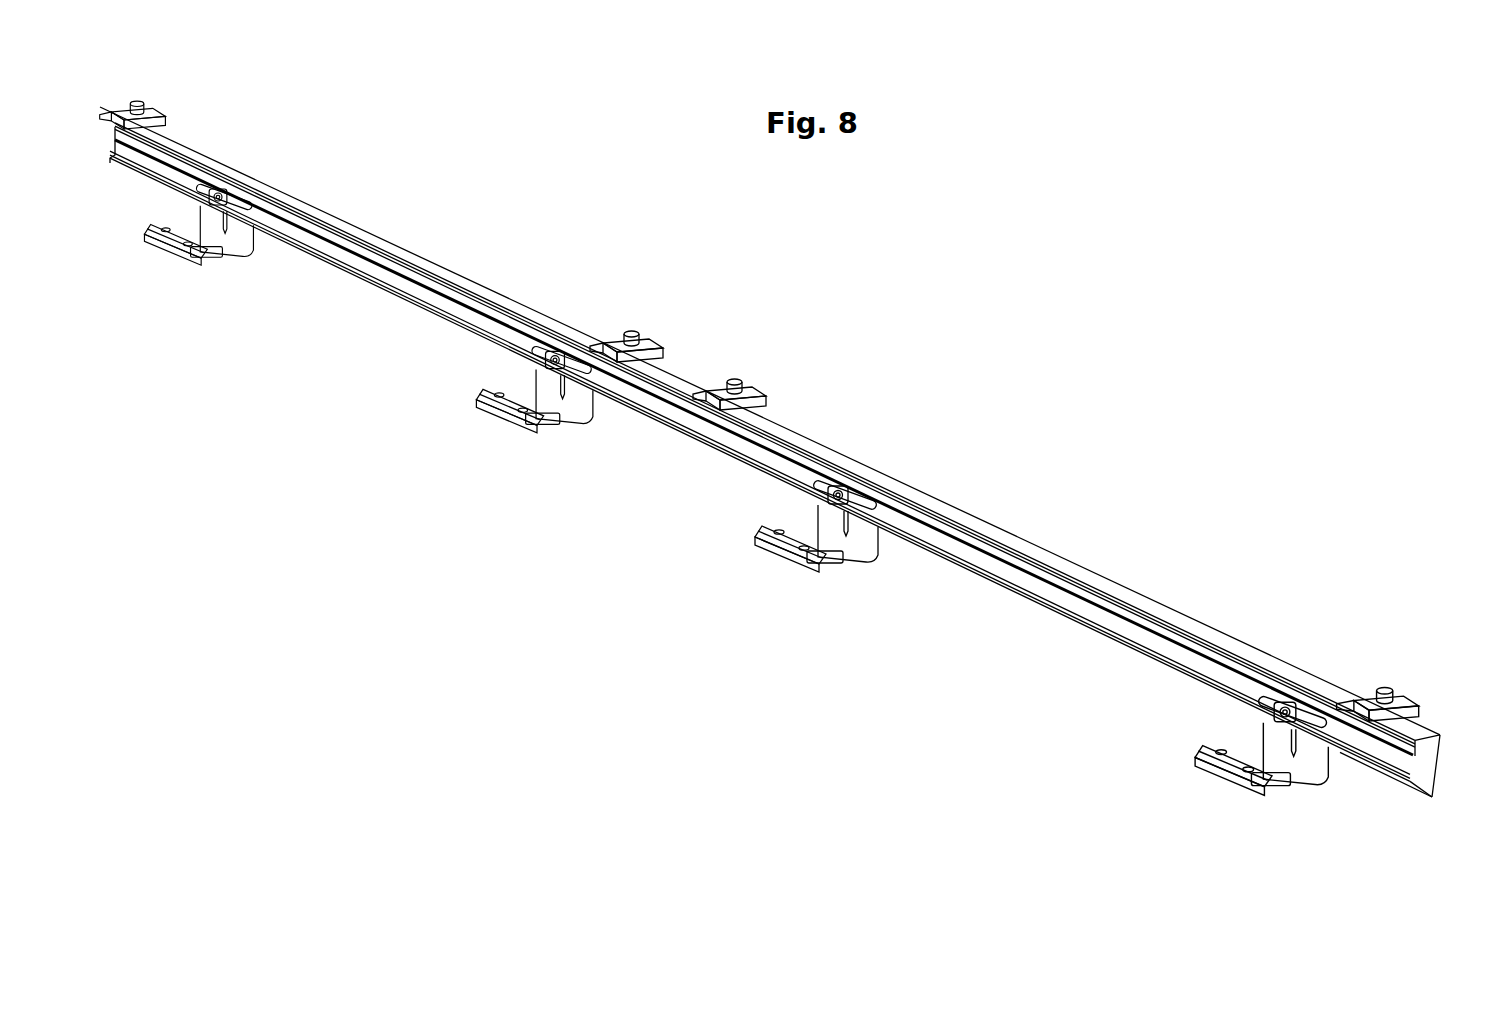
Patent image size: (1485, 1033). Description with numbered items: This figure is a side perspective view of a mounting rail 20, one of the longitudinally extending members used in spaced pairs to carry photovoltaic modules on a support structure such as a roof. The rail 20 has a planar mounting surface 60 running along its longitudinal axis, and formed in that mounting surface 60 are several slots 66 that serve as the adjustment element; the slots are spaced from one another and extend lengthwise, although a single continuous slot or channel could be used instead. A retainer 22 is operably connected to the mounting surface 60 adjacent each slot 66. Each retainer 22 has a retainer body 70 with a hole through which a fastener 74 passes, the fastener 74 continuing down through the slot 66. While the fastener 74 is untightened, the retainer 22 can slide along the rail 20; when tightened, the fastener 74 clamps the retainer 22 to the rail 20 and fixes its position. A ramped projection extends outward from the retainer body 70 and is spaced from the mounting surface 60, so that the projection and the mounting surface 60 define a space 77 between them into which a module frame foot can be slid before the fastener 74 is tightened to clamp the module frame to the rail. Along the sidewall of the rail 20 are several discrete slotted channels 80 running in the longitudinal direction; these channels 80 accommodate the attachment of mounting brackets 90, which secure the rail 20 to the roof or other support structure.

The mounting rail 20 is at (485, 288).
The retainer 22 is at (714, 388).
The mounting surface 60 is at (992, 525).
The slot 66 is at (770, 402).
The retainer body 70 is at (597, 418).
The fastener 74 is at (632, 334).
The space 77 is at (721, 422).
The slotted channel 80 is at (248, 236).
The mounting bracket 90 is at (478, 405).